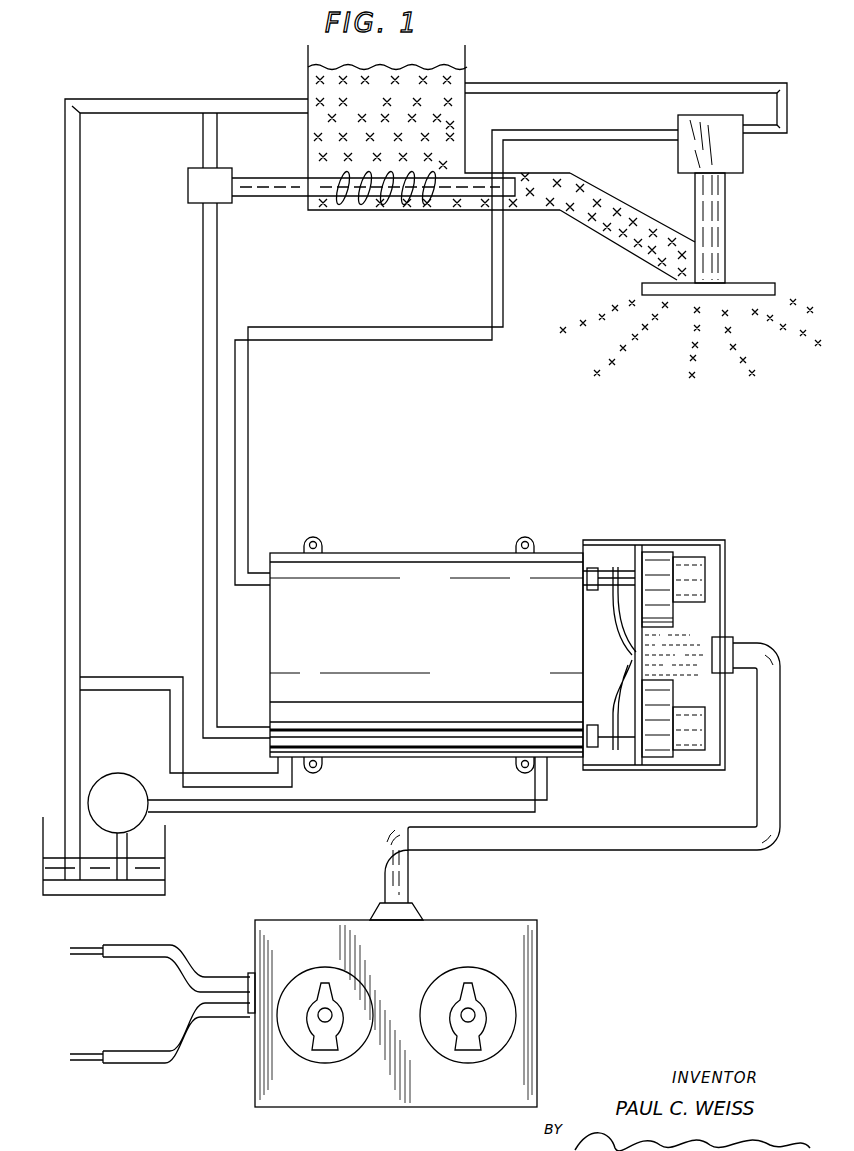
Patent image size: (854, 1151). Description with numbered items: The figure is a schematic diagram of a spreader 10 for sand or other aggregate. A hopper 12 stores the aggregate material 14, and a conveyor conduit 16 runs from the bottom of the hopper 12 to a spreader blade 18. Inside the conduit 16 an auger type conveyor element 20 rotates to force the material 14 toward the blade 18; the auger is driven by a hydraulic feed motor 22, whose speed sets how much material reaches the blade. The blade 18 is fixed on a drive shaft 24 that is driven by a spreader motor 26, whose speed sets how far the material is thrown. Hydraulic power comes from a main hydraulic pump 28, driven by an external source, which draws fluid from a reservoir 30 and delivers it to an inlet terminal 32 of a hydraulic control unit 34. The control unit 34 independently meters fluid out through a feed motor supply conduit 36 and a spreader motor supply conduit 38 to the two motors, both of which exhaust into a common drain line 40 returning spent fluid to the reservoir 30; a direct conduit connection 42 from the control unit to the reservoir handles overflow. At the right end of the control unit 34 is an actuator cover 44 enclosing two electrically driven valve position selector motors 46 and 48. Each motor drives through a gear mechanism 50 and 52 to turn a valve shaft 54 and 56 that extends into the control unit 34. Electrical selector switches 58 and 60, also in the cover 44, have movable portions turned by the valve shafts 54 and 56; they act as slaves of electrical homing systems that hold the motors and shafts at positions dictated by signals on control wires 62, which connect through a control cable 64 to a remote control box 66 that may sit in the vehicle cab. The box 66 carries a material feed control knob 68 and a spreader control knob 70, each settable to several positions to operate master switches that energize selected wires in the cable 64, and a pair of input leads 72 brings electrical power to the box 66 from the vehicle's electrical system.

The spreader 10 is at (589, 253).
The hopper 12 is at (466, 82).
The aggregate material 14 is at (318, 80).
The conveyor conduit 16 is at (452, 210).
The spreader blade 18 is at (747, 283).
The auger type conveyor element 20 is at (365, 205).
The hydraulic feed motor 22 is at (210, 190).
The drive shaft 24 is at (712, 216).
The spreader motor 26 is at (744, 158).
The main hydraulic pump 28 is at (133, 773).
The reservoir 30 is at (155, 873).
The inlet terminal 32 is at (334, 812).
The hydraulic control unit 34 is at (412, 553).
The feed motor supply conduit 36 is at (203, 490).
The spreader motor supply conduit 38 is at (634, 130).
The common drain line 40 is at (64, 436).
The direct conduit connection 42 is at (124, 676).
The actuator cover 44 is at (705, 542).
The valve position selector motor 46 is at (708, 580).
The valve position selector motor 48 is at (692, 714).
The gear mechanism 50 is at (662, 560).
The gear mechanism 52 is at (660, 765).
The valve shaft 54 is at (600, 568).
The valve shaft 56 is at (605, 725).
The electrical selector switch 58 is at (620, 565).
The electrical selector switch 60 is at (626, 768).
The control wires 62 is at (694, 648).
The control cable 64 is at (767, 700).
The control box 66 is at (468, 932).
The material feed control knob 68 is at (322, 1050).
The spreader control knob 70 is at (472, 1048).
The input leads 72 is at (138, 1050).